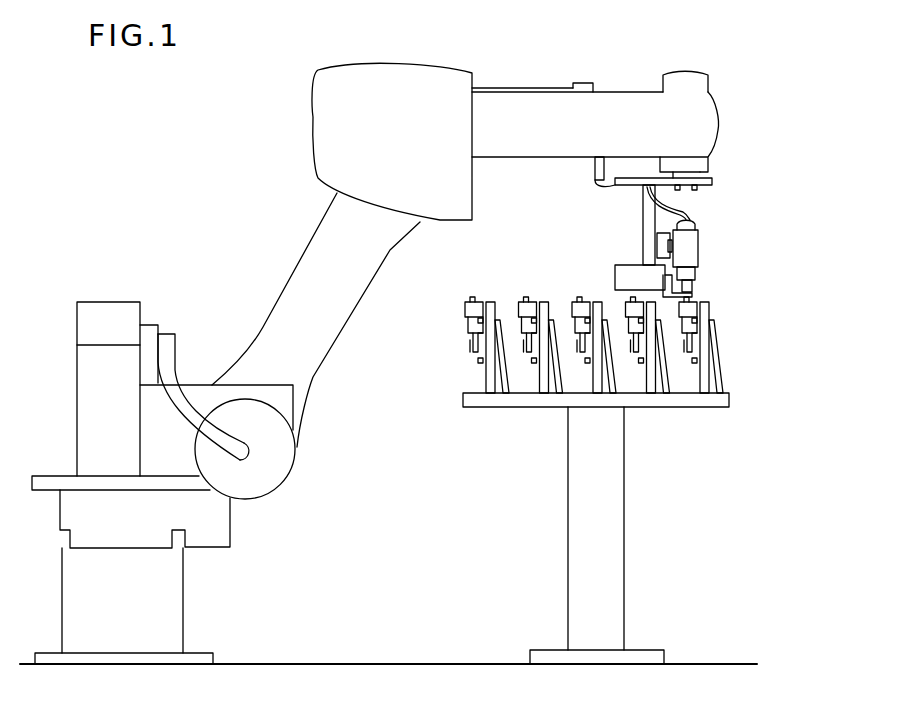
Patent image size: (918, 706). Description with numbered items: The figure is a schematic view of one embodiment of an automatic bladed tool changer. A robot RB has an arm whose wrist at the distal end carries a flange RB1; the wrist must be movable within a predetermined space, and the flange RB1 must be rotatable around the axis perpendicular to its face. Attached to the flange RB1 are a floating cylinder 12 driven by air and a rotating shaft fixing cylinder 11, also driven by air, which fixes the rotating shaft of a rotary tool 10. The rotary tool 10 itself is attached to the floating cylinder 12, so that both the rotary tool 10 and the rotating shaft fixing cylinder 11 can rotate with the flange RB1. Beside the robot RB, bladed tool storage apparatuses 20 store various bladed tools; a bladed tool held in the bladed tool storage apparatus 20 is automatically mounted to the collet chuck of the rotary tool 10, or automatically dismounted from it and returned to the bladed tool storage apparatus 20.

The robot RB is at (248, 289).
The flange RB1 is at (703, 166).
The rotary tool 10 is at (698, 248).
The rotating shaft fixing cylinder 11 is at (623, 281).
The floating cylinder 12 is at (657, 245).
The bladed tool storage apparatus 20 is at (597, 378).